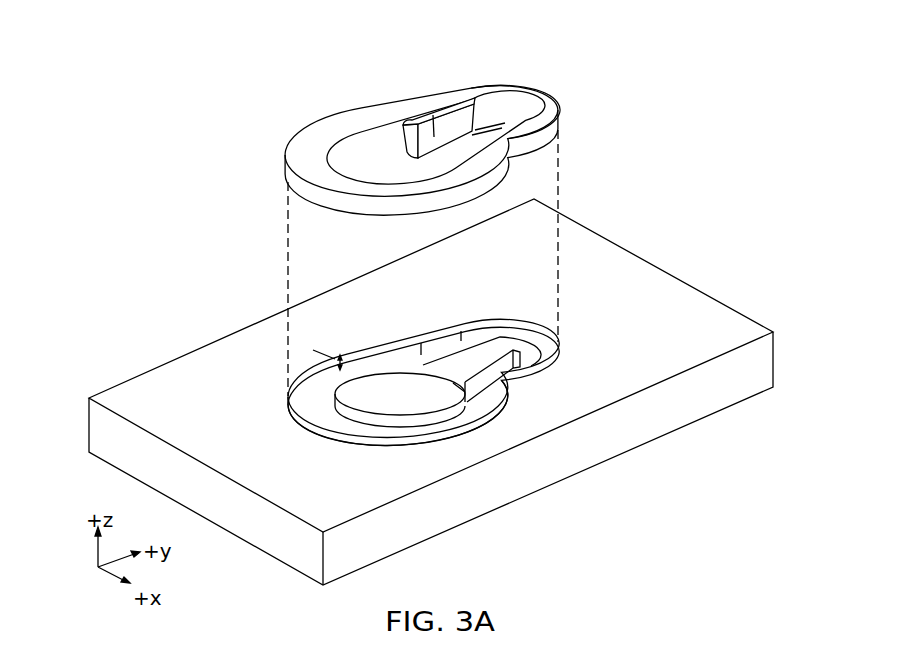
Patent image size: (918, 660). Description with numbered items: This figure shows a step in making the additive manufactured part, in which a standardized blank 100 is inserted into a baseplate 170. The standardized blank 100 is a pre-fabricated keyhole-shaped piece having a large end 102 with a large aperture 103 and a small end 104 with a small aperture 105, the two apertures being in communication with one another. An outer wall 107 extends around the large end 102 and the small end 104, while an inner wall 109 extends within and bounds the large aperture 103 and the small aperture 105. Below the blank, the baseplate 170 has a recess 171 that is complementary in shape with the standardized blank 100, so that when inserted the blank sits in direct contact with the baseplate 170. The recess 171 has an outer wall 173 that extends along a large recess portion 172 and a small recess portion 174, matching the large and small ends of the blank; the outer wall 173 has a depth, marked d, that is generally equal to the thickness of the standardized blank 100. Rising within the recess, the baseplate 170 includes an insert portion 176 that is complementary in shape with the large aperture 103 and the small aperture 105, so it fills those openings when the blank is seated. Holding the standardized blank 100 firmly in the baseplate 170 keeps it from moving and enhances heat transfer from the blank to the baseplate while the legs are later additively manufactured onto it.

The standardized blank 100 is at (176, 88).
The large end 102 is at (417, 135).
The large aperture 103 is at (365, 158).
The small end 104 is at (565, 105).
The small aperture 105 is at (452, 138).
The outer wall 107 is at (287, 180).
The inner wall 109 is at (498, 110).
The baseplate 170 is at (647, 243).
The recess 171 is at (470, 327).
The large recess portion 172 is at (374, 440).
The outer wall 173 is at (378, 342).
The small recess portion 174 is at (567, 335).
The insert portion 176 is at (420, 400).